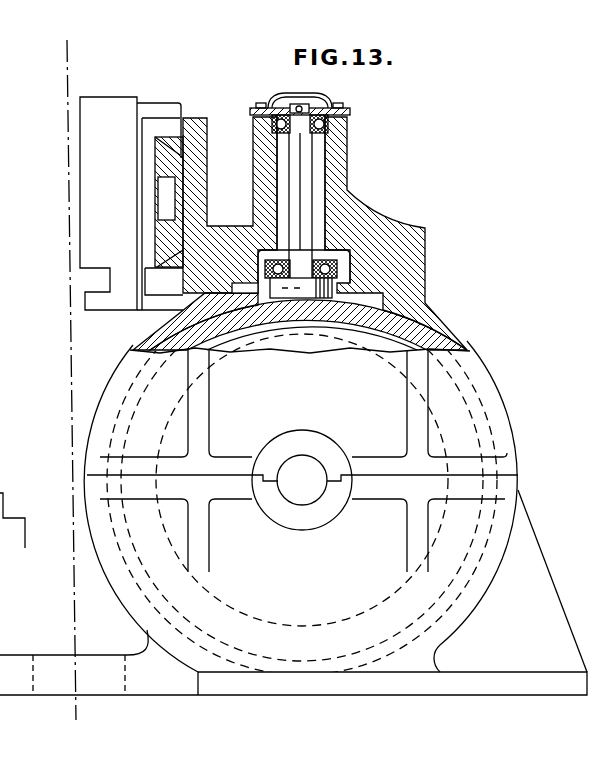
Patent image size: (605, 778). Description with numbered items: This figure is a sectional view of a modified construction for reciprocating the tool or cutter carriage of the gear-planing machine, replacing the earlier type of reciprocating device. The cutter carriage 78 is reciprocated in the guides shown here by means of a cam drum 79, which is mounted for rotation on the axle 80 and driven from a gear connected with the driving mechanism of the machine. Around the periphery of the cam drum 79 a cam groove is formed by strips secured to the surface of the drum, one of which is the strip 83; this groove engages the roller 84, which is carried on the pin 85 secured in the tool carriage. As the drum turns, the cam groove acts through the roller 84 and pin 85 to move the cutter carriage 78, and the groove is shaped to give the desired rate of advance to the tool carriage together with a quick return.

The cutter carriage 78 is at (253, 142).
The cam drum 79 is at (430, 339).
The axle 80 is at (307, 490).
The strip 83 is at (407, 327).
The roller 84 is at (336, 291).
The pin 85 is at (302, 178).